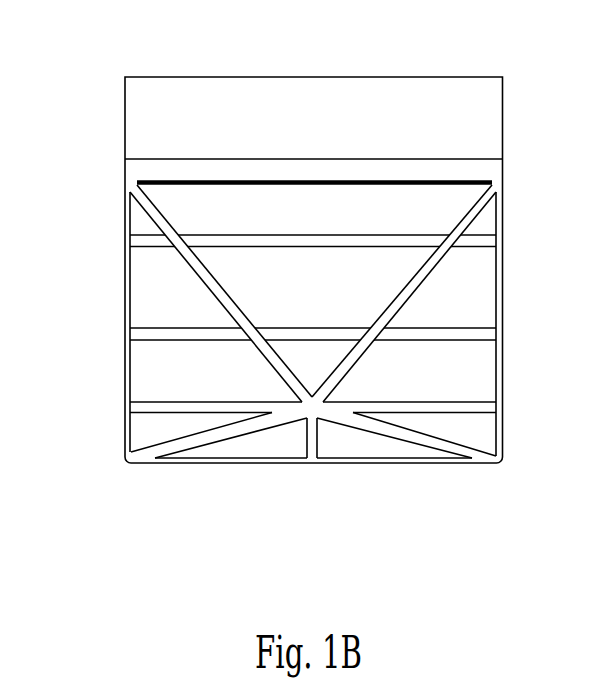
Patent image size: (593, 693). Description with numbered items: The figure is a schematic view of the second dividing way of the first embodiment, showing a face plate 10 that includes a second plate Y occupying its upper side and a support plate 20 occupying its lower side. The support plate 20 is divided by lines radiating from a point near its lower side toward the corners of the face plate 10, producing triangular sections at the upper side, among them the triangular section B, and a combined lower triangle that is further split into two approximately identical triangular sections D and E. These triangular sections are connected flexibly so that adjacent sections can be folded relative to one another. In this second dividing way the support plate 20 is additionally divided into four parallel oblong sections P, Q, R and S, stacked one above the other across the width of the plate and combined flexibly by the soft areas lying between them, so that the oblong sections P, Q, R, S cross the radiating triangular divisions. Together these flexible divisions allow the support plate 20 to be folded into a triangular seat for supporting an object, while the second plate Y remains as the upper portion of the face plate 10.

The face plate 10 is at (107, 57).
The support plate 20 is at (122, 320).
The second plate Y is at (495, 95).
The oblong section P is at (495, 217).
The triangular section B is at (135, 265).
The oblong section Q is at (493, 305).
The oblong section R is at (493, 370).
The oblong section S is at (495, 437).
The triangular section E is at (275, 453).
The triangular section D is at (358, 453).